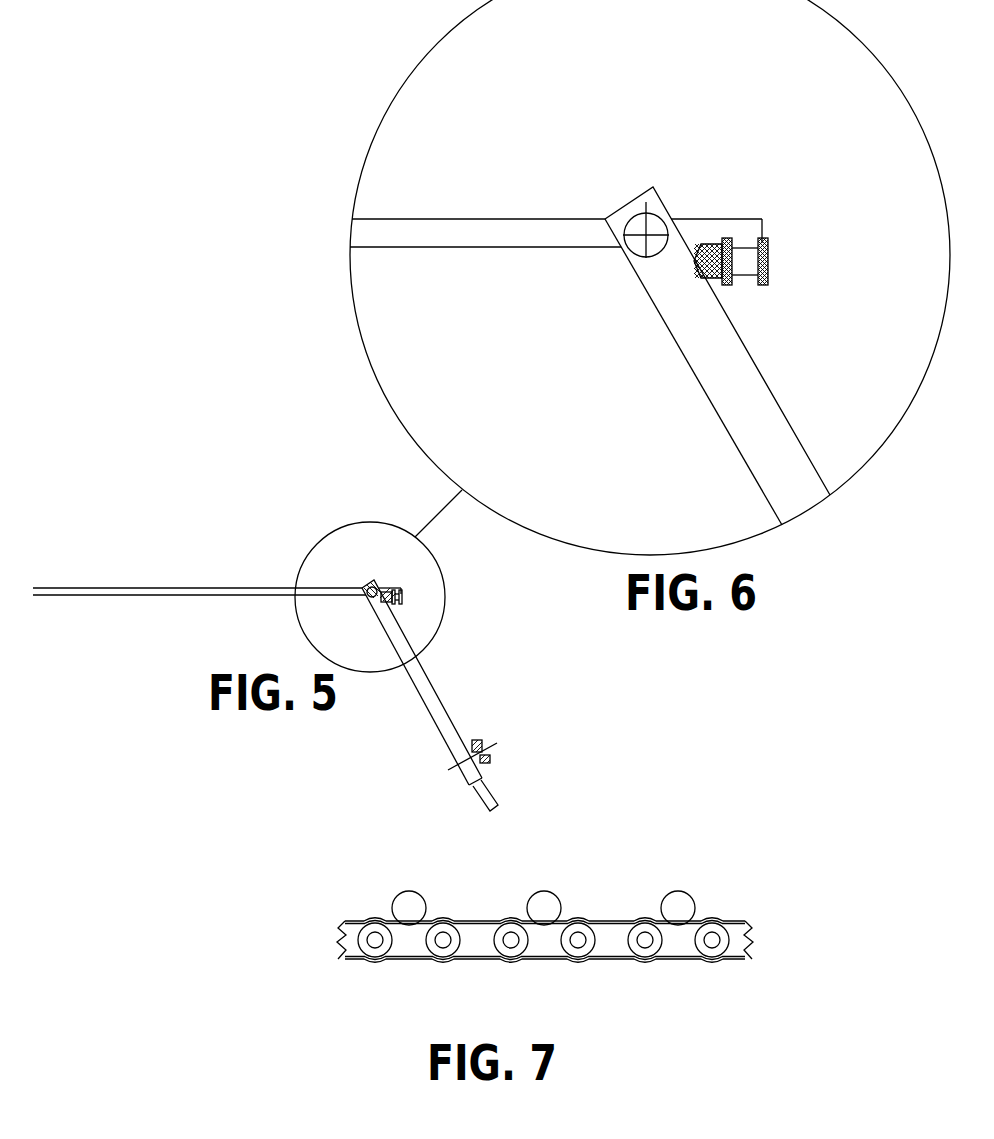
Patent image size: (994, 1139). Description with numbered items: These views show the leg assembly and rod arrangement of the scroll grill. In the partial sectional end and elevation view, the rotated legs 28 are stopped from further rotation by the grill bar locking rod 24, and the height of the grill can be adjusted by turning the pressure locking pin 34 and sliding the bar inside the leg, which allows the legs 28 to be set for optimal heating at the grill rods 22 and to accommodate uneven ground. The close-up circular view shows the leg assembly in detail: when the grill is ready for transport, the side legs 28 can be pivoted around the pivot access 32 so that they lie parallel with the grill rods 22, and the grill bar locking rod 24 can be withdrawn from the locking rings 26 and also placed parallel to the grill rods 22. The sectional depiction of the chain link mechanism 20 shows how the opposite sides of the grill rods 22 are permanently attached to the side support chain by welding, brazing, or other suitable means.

In FIG. 6, the chain link mechanism 20 is at (768, 273).
In FIG. 7, the chain link mechanism 20 is at (680, 960).
In FIG. 6, the grill rods 22 is at (430, 219).
In FIG. 5, the grill rods 22 is at (107, 588).
In FIG. 7, the grill rods 22 is at (688, 891).
In FIG. 6, the grill bar locking rod 24 is at (719, 244).
In FIG. 6, the locking rings 26 is at (705, 276).
In FIG. 6, the legs 28 is at (802, 443).
In FIG. 6, the pivot access 32 is at (653, 188).
In FIG. 5, the pressure locking pin 34 is at (483, 738).